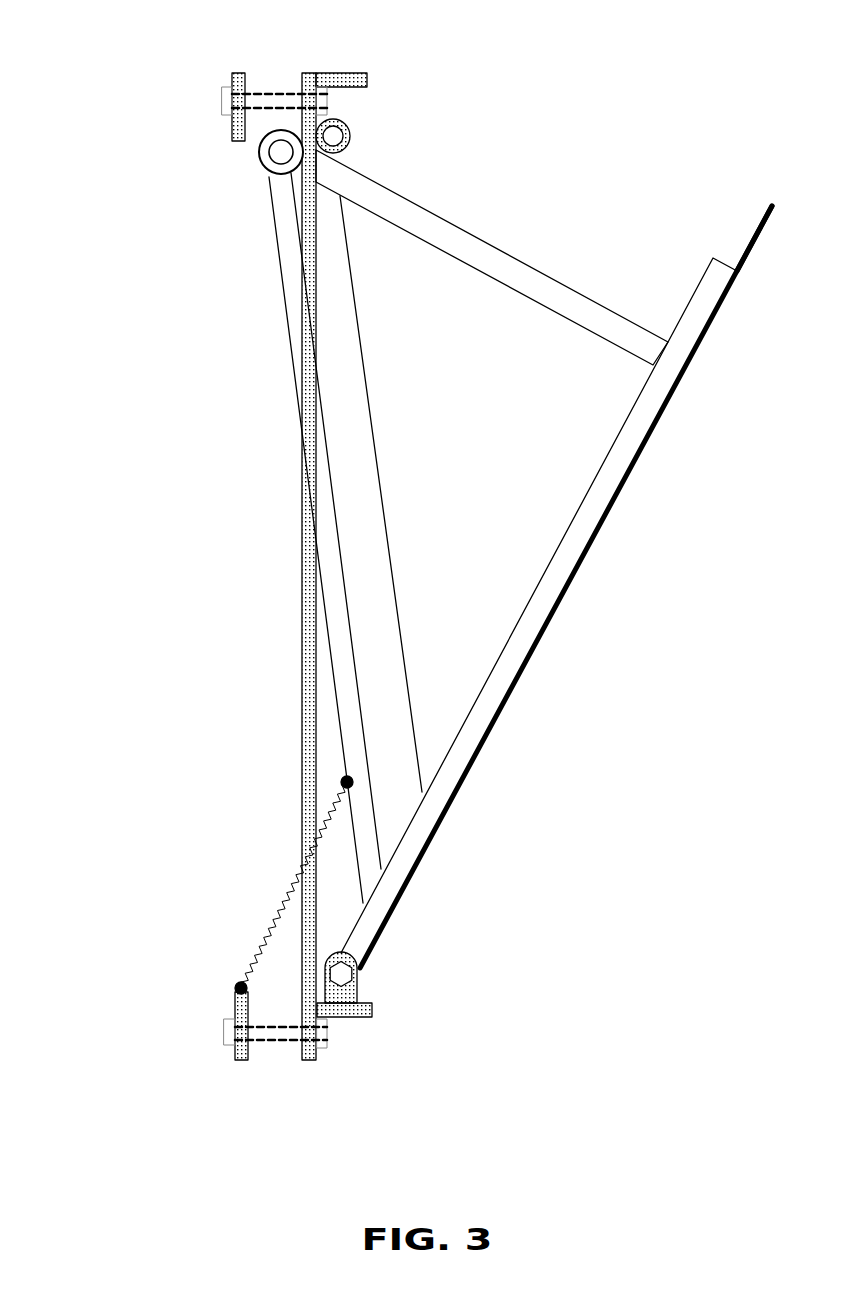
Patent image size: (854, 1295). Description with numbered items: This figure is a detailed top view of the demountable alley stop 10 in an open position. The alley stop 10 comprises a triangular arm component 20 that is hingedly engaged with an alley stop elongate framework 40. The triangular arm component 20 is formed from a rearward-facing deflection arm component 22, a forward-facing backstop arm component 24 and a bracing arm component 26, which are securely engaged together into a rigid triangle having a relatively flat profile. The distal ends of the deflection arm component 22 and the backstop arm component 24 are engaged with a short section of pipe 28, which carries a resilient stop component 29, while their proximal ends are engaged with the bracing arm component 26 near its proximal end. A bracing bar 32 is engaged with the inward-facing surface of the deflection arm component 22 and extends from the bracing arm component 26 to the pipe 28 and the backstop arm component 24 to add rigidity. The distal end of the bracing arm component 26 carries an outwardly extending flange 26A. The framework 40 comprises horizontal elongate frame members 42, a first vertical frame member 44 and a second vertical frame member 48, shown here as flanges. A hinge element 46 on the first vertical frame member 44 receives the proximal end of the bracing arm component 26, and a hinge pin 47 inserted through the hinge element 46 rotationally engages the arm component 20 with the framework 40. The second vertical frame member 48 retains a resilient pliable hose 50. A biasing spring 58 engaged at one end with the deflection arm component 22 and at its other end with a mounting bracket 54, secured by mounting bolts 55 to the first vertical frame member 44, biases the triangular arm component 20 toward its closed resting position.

The demountable alley stop 10 is at (542, 118).
The triangular arm component 20 is at (552, 683).
The rearward-facing deflection arm component 22 is at (282, 287).
The forward-facing backstop arm component 24 is at (607, 308).
The bracing arm component 26 is at (570, 582).
The bracing arm flange 26A is at (752, 238).
The pipe 28 is at (260, 152).
The resilient stop component 29 is at (278, 163).
The bracing bar 32 is at (372, 320).
The alley stop elongate framework 40 is at (255, 690).
The horizontal elongate frame member 42 is at (300, 628).
The first vertical elongate frame member 44 is at (355, 1018).
The hinge element 46 is at (357, 988).
The hinge pin 47 is at (355, 962).
The second vertical frame member 48 is at (365, 75).
The resilient pliable hose 50 is at (345, 118).
The mounting bracket 54 is at (233, 123).
The mounting bolts 55 is at (279, 93).
The biasing spring 58 is at (275, 928).